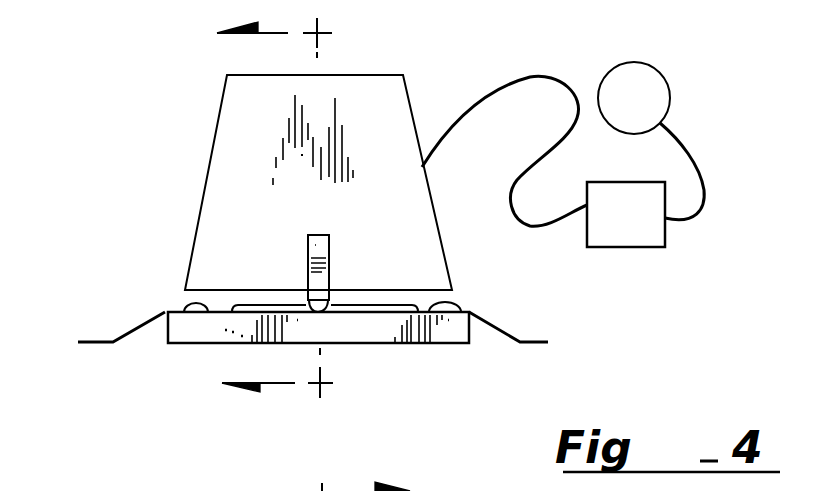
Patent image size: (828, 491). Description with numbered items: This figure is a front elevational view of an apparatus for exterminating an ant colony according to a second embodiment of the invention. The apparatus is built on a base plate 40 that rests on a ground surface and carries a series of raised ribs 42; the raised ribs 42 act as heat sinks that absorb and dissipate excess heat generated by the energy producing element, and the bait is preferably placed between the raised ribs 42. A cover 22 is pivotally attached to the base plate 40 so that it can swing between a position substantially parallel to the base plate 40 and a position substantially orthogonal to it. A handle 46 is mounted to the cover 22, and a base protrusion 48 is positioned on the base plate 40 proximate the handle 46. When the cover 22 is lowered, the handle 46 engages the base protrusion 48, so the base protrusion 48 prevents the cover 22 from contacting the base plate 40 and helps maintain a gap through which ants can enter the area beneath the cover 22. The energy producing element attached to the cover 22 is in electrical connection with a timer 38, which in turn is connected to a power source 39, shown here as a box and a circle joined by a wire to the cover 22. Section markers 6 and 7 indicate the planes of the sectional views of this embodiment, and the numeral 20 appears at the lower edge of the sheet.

The section line 6- 6 is at (288, 208).
The cover 22 is at (382, 108).
The power source 39 is at (651, 111).
The timer 38 is at (645, 225).
The base plate 40 is at (416, 305).
The raised ribs 42 is at (233, 312).
The handle 46 is at (329, 250).
The base protrusion 48 is at (318, 312).
The section line 7- 7 is at (348, 484).
The light emitting device 20 is at (172, 486).